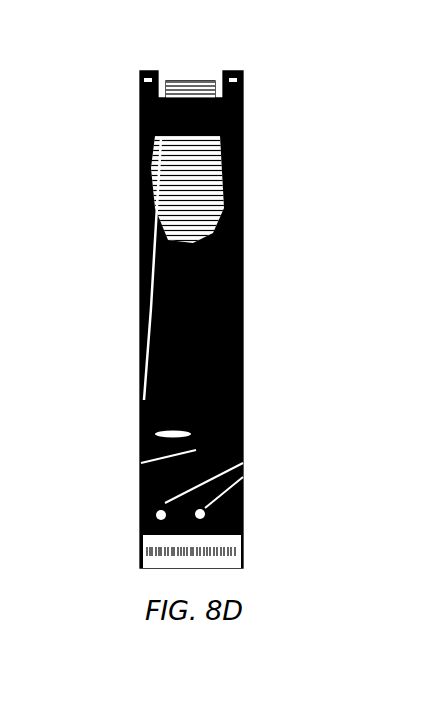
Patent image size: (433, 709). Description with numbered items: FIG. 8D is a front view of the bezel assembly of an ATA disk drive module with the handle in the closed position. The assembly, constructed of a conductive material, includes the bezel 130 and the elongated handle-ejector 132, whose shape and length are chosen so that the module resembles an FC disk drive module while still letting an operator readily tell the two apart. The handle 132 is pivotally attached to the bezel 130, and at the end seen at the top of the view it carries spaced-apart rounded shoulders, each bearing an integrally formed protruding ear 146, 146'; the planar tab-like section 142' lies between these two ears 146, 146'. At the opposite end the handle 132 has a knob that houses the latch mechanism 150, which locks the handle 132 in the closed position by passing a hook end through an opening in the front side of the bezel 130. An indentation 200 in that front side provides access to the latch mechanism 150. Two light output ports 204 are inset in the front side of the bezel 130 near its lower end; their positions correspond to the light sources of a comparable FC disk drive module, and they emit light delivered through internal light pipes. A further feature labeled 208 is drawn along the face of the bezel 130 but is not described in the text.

The bezel 130 is at (235, 218).
The handle-ejector 132 is at (185, 205).
The planar tab-like section 142' is at (190, 55).
The protruding ear 146' is at (128, 57).
The protruding ear 146 is at (252, 64).
The edge strip 208 is at (133, 343).
The latch mechanism 150 is at (133, 418).
The indentation 200 is at (133, 455).
The light output ports 204 is at (235, 469).